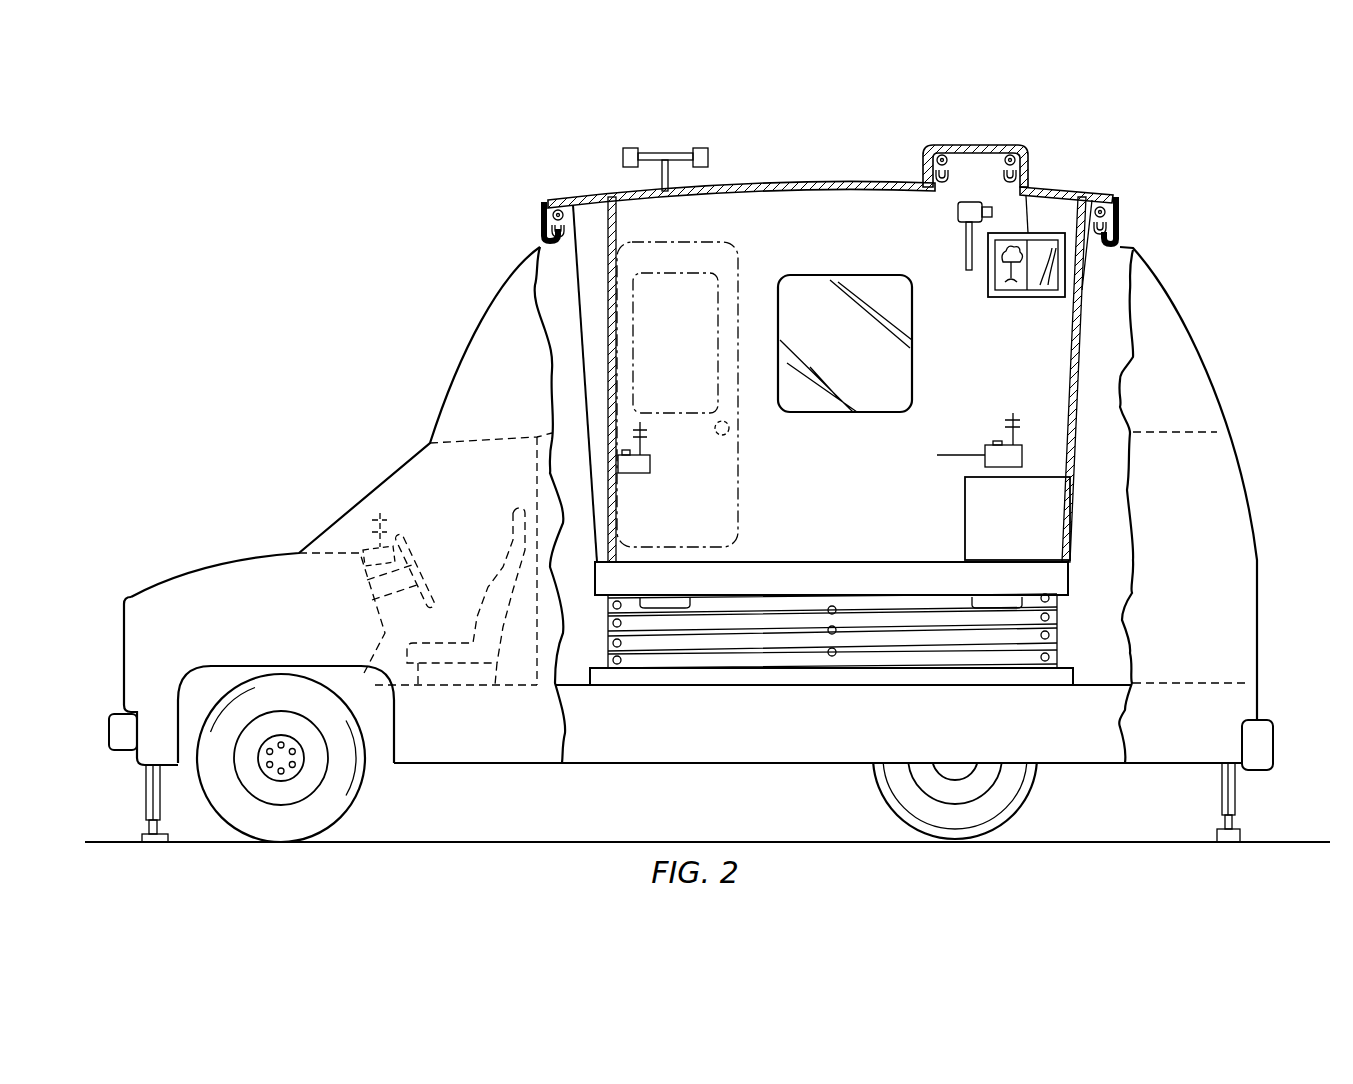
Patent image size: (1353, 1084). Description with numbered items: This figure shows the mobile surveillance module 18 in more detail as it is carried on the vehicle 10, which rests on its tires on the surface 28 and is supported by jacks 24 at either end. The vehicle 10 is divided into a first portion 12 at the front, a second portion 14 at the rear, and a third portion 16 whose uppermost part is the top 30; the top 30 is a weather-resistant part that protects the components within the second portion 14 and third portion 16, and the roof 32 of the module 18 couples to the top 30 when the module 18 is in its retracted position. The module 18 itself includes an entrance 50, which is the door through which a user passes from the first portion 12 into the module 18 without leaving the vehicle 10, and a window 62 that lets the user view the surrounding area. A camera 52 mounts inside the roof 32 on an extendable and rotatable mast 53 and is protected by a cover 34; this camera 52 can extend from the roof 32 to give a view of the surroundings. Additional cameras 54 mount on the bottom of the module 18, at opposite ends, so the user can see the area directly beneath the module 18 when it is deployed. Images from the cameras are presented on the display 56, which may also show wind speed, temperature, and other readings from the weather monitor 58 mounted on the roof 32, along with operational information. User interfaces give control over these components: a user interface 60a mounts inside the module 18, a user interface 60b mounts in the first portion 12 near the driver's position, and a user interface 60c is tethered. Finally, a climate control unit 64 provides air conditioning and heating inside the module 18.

The vehicle 10 is at (476, 161).
The first portion 12 is at (424, 468).
The second portion 14 is at (1226, 497).
The third portion 16 is at (1192, 333).
The module 18 is at (1073, 443).
The jacks 24 is at (146, 791).
The surface 28 is at (690, 842).
The top 30 is at (1127, 240).
The roof 32 is at (805, 183).
The cover 34 is at (982, 140).
The entrance 50 is at (740, 477).
The camera 52 is at (955, 207).
The mast 53 is at (965, 245).
The cameras 54 is at (703, 597).
The display 56 is at (1027, 297).
The weather monitor 58 is at (663, 148).
The user interface 60a is at (650, 467).
The user interface 60b is at (380, 511).
The user interface 60c is at (995, 441).
The window 62 is at (842, 412).
The climate control unit 64 is at (965, 518).